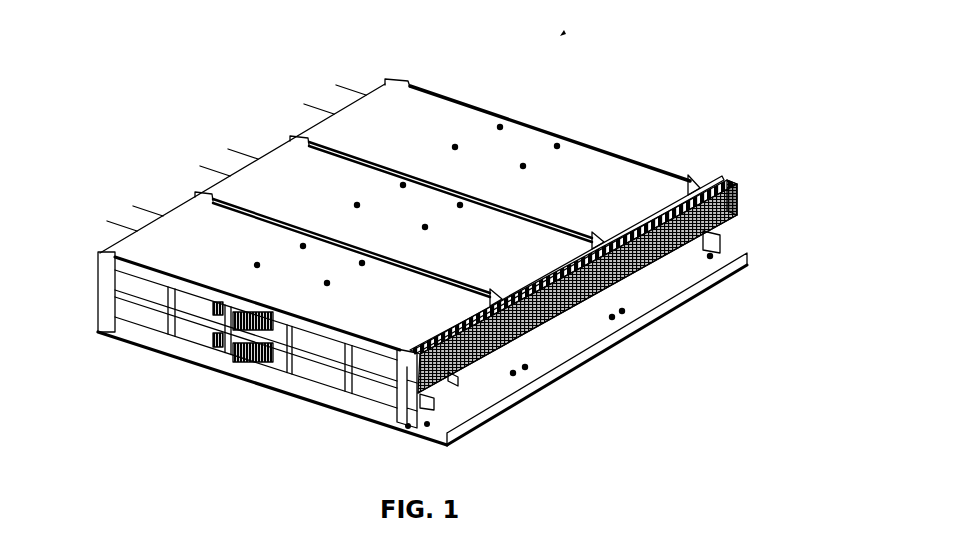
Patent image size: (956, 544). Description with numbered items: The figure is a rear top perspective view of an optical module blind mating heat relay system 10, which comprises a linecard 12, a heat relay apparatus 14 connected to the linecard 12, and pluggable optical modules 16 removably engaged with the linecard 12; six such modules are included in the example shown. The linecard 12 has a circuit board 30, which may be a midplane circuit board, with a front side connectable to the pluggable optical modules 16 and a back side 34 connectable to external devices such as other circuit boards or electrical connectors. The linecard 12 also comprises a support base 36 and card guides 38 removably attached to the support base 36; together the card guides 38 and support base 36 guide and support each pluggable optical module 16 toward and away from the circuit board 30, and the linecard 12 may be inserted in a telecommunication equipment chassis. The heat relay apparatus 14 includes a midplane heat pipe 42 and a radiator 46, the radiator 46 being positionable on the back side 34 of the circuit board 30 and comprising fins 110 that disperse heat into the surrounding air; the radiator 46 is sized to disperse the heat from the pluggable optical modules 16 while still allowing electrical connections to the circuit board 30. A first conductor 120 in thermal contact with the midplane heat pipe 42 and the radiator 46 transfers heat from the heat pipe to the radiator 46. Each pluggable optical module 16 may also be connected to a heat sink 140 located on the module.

The optical module blind mating heat relay system 10 is at (564, 30).
The linecard 12 is at (183, 356).
The heat relay apparatus 14 is at (738, 192).
The pluggable optical module 16 is at (372, 95).
The circuit board 30 is at (721, 178).
The back side 34 is at (723, 251).
The support base 36 is at (296, 393).
The card guides 38 is at (397, 79).
The midplane heat pipe 42 is at (409, 383).
The radiator 46 is at (740, 213).
The fins 110 is at (455, 372).
The first conductor 120 is at (407, 398).
The heat sink 140 is at (213, 307).